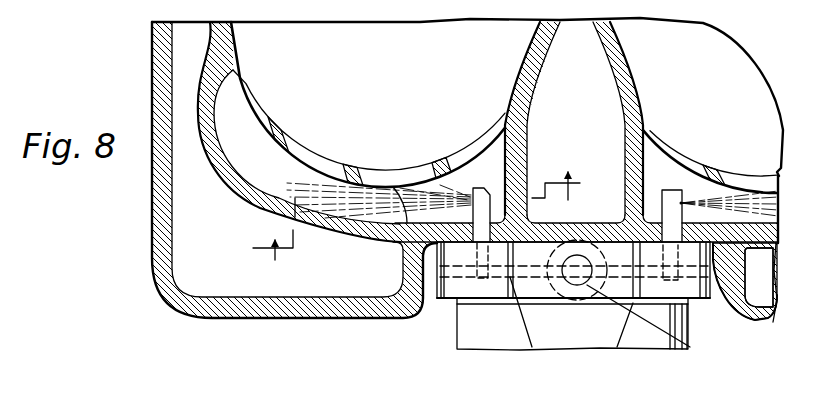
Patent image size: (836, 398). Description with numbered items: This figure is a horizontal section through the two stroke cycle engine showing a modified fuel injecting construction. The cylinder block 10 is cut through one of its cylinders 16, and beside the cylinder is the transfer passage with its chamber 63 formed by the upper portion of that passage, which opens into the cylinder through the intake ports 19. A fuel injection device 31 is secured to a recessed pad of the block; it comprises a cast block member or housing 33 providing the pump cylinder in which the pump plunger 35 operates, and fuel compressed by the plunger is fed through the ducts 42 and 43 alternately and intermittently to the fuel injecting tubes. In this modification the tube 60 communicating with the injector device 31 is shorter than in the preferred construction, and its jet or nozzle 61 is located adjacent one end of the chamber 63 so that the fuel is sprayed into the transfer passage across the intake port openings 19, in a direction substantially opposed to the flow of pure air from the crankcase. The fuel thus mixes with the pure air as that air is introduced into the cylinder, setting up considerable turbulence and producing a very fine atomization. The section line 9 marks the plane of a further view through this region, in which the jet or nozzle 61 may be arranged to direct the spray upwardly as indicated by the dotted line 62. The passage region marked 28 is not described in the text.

The cylinder block 10 is at (152, 90).
The cylinder 16 is at (215, 41).
The chamber 28 is at (188, 72).
The intake port 19 is at (260, 112).
The tube 60 is at (490, 193).
The jet or nozzle 61 is at (484, 188).
The section line 9 is at (422, 223).
The chamber 63 is at (407, 216).
The fuel injection device 31 is at (583, 350).
The duct 42 is at (500, 277).
The block member or housing 33 is at (622, 323).
The pump plunger 35 is at (654, 324).
The duct 43 is at (687, 310).
The dotted line 62 is at (238, 394).